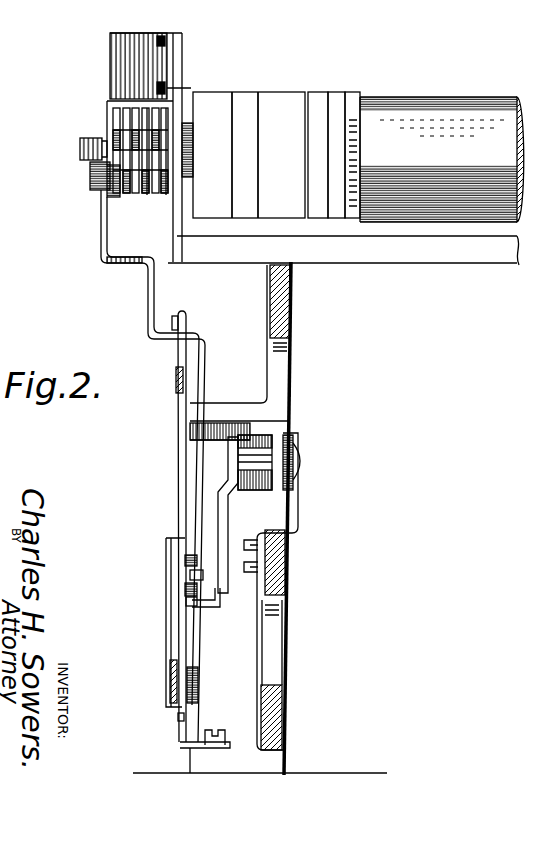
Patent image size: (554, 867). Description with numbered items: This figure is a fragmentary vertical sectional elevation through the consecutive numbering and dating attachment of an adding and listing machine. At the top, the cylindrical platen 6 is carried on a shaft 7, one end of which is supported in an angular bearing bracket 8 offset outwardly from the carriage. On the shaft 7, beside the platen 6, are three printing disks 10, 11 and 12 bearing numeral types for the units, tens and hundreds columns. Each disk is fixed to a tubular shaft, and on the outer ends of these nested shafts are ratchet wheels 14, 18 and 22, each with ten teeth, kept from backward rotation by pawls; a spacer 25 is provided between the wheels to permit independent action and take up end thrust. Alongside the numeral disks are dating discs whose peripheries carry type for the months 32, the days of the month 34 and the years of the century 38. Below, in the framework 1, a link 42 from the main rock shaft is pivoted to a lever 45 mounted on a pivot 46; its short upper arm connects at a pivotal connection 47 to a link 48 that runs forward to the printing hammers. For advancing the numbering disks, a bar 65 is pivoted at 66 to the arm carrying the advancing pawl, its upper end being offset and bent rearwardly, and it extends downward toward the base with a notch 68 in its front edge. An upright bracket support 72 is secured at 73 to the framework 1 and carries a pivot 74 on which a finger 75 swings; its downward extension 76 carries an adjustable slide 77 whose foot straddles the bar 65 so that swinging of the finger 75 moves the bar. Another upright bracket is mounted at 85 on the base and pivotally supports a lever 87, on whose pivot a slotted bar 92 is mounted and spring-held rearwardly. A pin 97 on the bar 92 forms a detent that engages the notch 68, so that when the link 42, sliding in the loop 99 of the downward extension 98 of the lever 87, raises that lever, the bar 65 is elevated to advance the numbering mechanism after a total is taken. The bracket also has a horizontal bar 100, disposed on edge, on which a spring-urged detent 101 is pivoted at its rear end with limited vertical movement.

The framework 1 is at (294, 322).
The cylindrical platen 6 is at (440, 107).
The shaft 7 is at (80, 147).
The angular bearing bracket 8 is at (108, 53).
The printing disk 10 is at (358, 93).
The printing disk 11 is at (337, 92).
The printing disk 12 is at (318, 92).
The ratchet wheel 14 is at (128, 118).
The ratchet wheel 18 is at (135, 196).
The ratchet wheel 22 is at (150, 197).
The spacer 25 is at (164, 197).
The month designations 32 is at (231, 92).
The day designations 34 is at (241, 92).
The year designations 38 is at (285, 220).
The link 42 is at (168, 688).
The lever 45 is at (180, 471).
The pivot 46 is at (245, 393).
The pivotal connection 47 is at (180, 318).
The link 48 is at (176, 375).
The bar 65 is at (143, 301).
The pivot 66 is at (90, 180).
The notch 68 is at (186, 560).
The upright bracket support 72 is at (299, 495).
The securing point 73 is at (268, 558).
The pivot 74 is at (268, 446).
The finger 75 is at (292, 446).
The downward extension 76 is at (227, 597).
The slide 77 is at (220, 510).
The mounting point 85 is at (207, 746).
The lever 87 is at (167, 541).
The bar 92 is at (190, 603).
The pin 97 is at (195, 575).
The downward extension 98 is at (185, 602).
The loop 99 is at (172, 663).
The horizontal bar 100 is at (191, 670).
The detent 101 is at (178, 717).